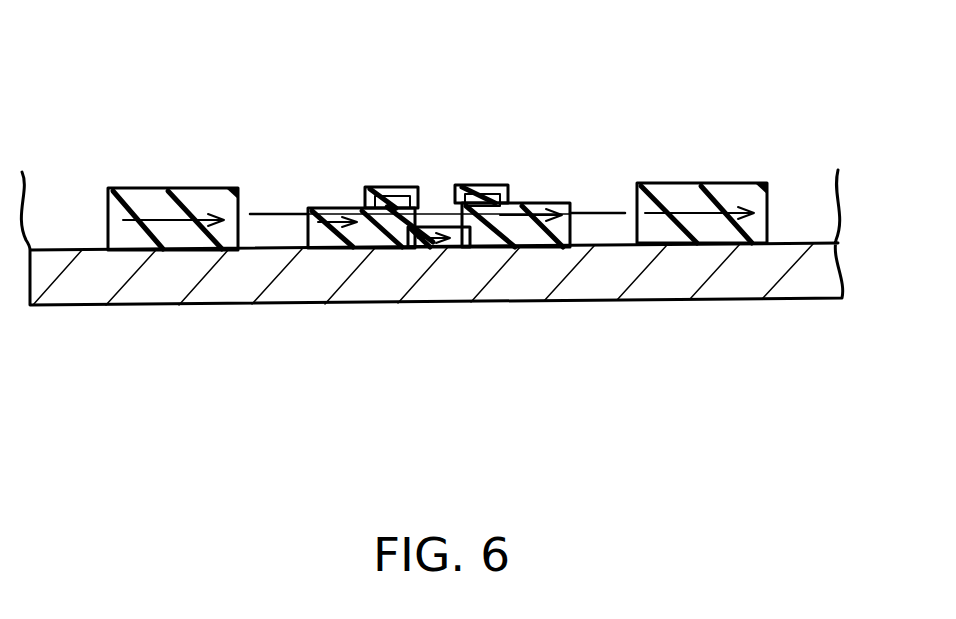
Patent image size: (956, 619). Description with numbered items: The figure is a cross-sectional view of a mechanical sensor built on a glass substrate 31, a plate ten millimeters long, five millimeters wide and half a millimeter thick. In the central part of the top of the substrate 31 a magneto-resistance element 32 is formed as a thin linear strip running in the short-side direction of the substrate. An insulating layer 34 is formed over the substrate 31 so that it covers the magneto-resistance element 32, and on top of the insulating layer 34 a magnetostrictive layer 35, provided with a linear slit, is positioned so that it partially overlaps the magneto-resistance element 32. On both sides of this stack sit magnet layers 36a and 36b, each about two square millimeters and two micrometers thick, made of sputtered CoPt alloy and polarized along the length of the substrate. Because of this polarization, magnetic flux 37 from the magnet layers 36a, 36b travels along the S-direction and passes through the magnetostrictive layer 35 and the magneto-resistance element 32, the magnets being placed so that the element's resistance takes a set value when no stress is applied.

The glass substrate 31 is at (787, 280).
The magneto-resistance element 32 is at (455, 248).
The insulating layer 34 is at (344, 249).
The magnetostrictive layer 35 is at (503, 185).
The magnet layer 36a is at (172, 187).
The magnet layer 36b is at (760, 182).
The magnetic flux 37 is at (617, 212).